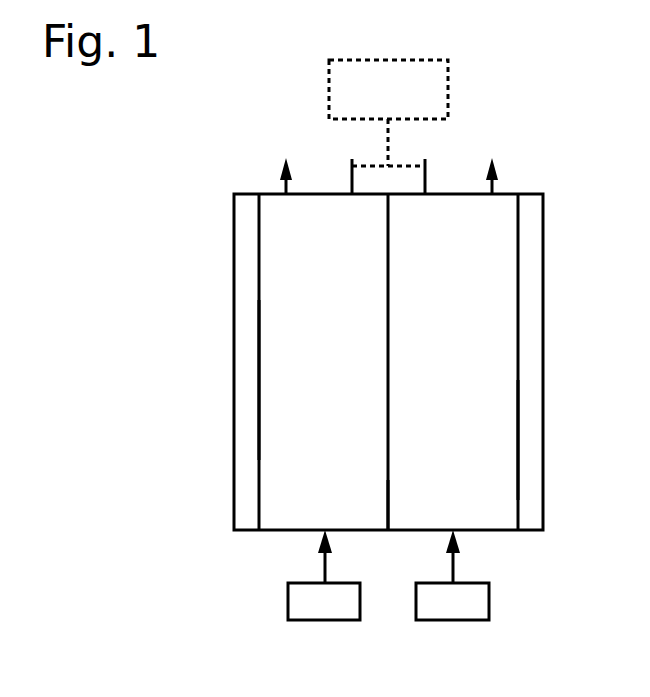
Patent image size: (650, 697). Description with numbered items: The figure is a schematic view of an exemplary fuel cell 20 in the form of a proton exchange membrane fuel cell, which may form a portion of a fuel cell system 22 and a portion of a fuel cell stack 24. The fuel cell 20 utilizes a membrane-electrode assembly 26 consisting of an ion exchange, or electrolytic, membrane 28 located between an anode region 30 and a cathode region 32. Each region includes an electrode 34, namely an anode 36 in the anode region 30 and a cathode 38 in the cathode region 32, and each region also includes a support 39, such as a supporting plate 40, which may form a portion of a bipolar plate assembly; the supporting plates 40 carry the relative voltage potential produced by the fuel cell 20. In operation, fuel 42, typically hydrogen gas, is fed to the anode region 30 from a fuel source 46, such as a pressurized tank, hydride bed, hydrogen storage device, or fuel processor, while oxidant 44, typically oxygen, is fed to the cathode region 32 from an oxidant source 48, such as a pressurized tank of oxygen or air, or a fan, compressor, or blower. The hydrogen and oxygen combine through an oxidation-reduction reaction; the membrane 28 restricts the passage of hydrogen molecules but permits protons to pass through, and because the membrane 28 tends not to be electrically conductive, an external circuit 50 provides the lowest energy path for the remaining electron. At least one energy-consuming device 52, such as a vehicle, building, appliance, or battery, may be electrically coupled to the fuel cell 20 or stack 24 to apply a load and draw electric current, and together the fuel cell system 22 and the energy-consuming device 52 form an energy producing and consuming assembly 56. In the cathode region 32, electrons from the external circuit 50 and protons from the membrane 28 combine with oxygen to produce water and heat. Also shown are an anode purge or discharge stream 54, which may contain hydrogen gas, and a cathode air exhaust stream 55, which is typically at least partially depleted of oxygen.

The fuel cell 20 is at (215, 317).
The fuel cell system 22 is at (200, 122).
The fuel cell stack 24 is at (173, 265).
The membrane-electrode assembly 26 is at (389, 537).
The ion exchange membrane 28 is at (390, 322).
The anode region 30 is at (257, 420).
The cathode region 32 is at (524, 442).
The electrode 34 is at (333, 507).
The anode 36 is at (283, 507).
The cathode 38 is at (458, 508).
The support 39 is at (546, 318).
The supporting plate 40 is at (234, 350).
The fuel 42 is at (322, 570).
The oxidant 44 is at (450, 570).
The fuel source 46 is at (327, 622).
The oxidant source 48 is at (455, 622).
The external circuit 50 is at (370, 163).
The energy-consuming device 52 is at (450, 86).
The anode purge or discharge stream 54 is at (283, 186).
The cathode air exhaust stream 55 is at (495, 186).
The energy producing and consuming assembly 56 is at (113, 200).